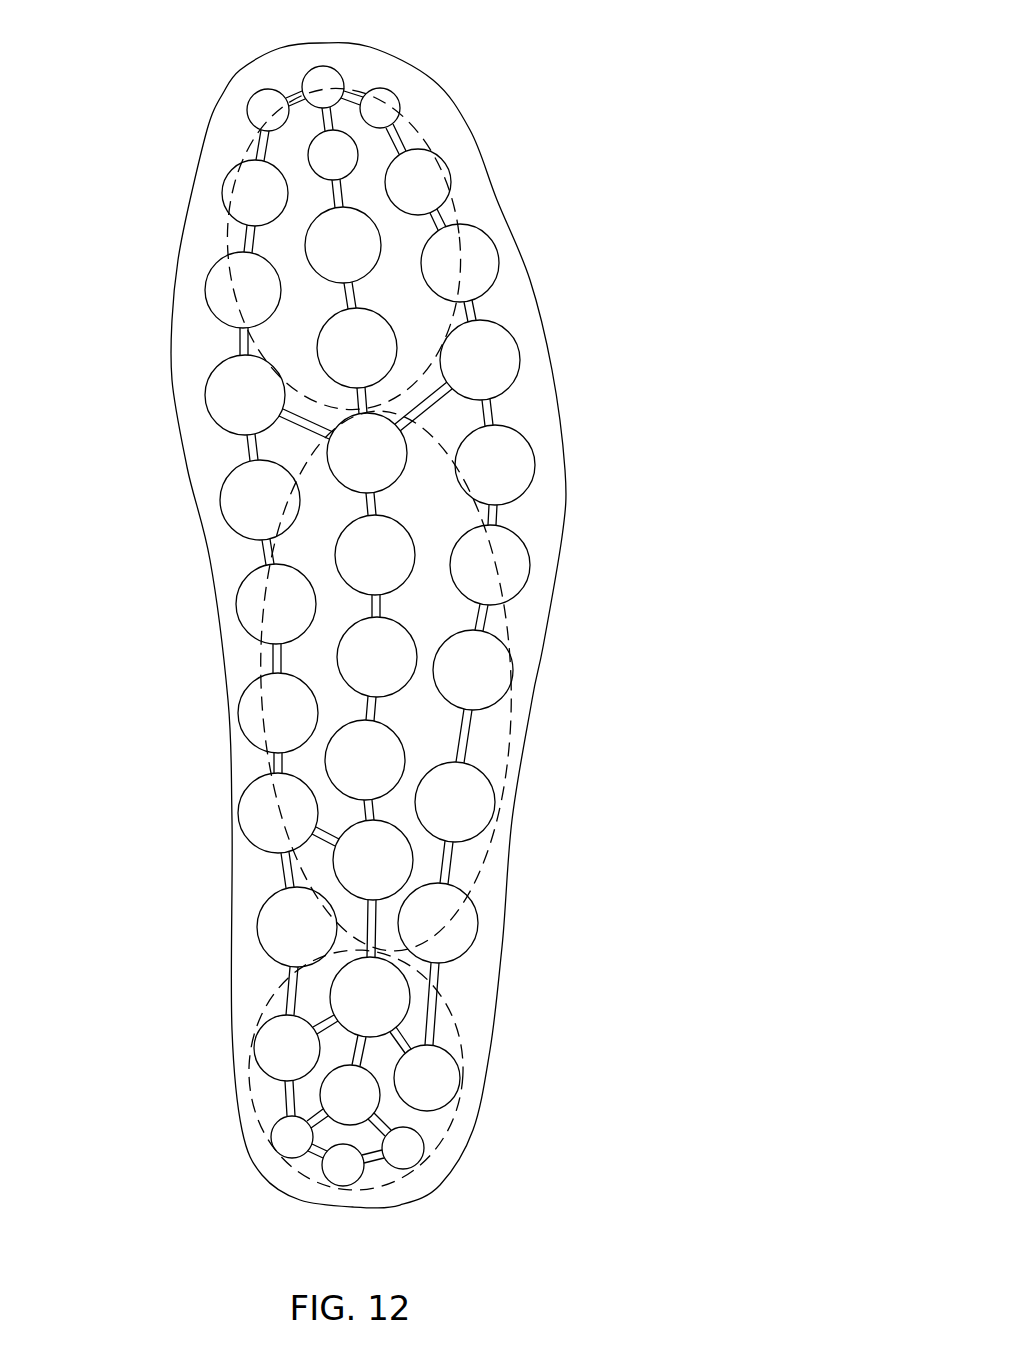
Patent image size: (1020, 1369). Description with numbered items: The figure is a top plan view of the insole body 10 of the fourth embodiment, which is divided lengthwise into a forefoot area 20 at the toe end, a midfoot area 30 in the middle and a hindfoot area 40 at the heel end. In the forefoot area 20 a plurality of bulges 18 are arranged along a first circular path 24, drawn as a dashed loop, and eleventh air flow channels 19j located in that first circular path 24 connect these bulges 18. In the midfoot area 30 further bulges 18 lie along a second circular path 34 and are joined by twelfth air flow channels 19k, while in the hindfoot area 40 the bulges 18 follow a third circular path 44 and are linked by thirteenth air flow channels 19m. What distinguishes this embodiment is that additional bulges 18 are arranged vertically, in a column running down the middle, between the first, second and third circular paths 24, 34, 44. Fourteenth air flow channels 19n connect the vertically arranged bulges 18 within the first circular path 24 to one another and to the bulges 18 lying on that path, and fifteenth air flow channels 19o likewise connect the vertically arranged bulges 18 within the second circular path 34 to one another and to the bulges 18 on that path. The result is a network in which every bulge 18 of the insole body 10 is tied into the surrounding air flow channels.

The insole body 10 is at (508, 96).
The bulges 18 is at (243, 185).
The eleventh air flow channels 19j is at (498, 412).
The twelfth air flow channels 19k is at (478, 742).
The thirteenth air flow channels 19m is at (440, 1028).
The fourteenth air flow channels 19n is at (387, 140).
The fifteenth air flow channels 19o is at (382, 607).
The forefoot area 20 is at (370, 295).
The first circular path 24 is at (223, 233).
The midfoot area 30 is at (391, 726).
The second circular path 34 is at (267, 625).
The hindfoot area 40 is at (235, 1102).
The third circular path 44 is at (283, 992).